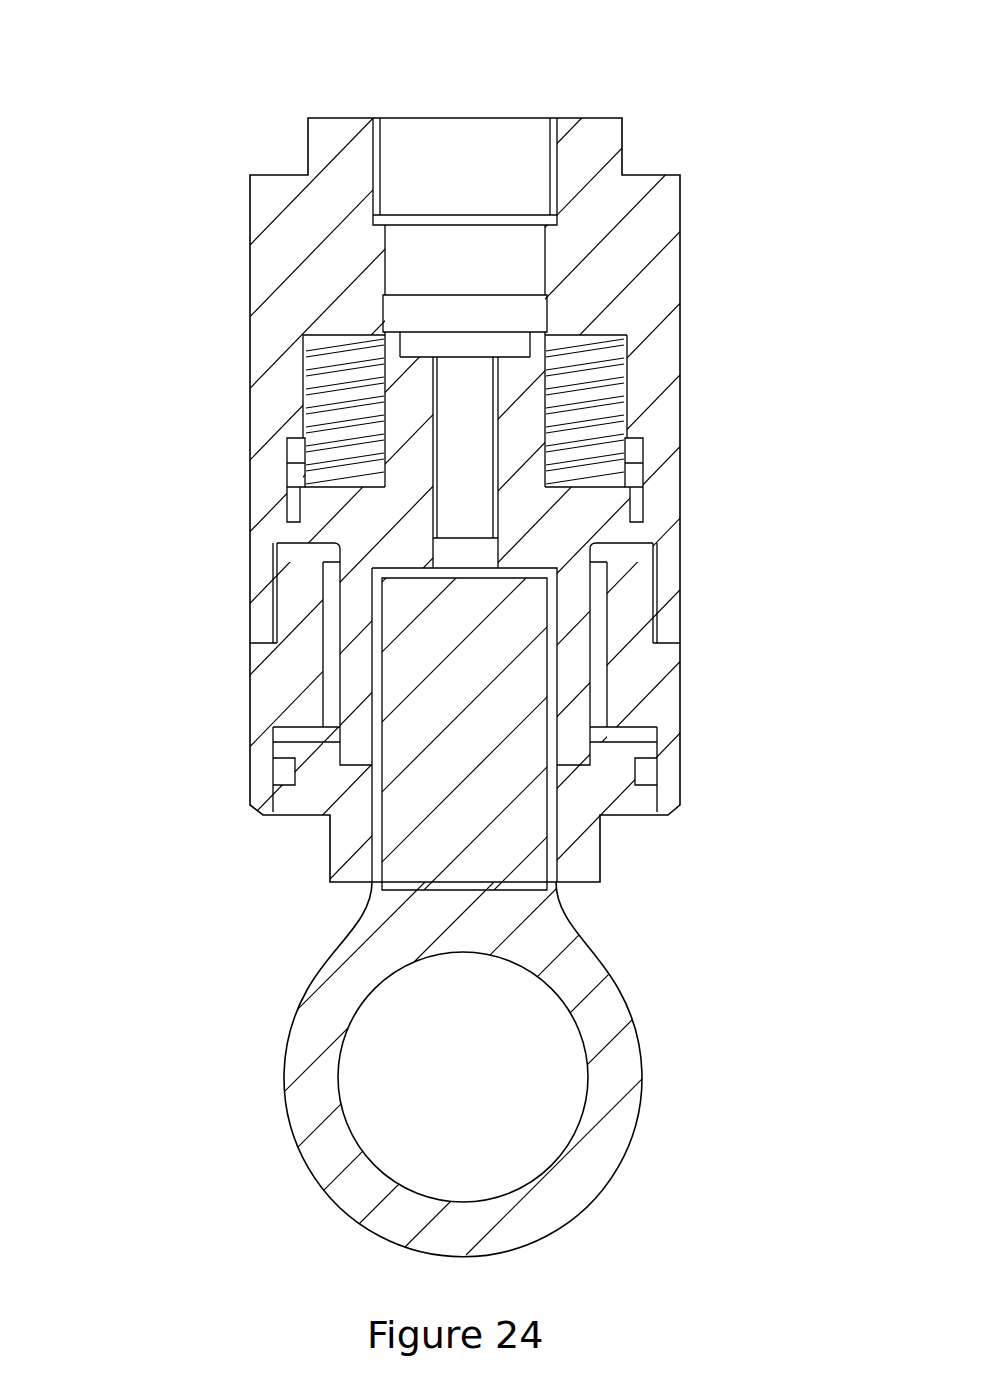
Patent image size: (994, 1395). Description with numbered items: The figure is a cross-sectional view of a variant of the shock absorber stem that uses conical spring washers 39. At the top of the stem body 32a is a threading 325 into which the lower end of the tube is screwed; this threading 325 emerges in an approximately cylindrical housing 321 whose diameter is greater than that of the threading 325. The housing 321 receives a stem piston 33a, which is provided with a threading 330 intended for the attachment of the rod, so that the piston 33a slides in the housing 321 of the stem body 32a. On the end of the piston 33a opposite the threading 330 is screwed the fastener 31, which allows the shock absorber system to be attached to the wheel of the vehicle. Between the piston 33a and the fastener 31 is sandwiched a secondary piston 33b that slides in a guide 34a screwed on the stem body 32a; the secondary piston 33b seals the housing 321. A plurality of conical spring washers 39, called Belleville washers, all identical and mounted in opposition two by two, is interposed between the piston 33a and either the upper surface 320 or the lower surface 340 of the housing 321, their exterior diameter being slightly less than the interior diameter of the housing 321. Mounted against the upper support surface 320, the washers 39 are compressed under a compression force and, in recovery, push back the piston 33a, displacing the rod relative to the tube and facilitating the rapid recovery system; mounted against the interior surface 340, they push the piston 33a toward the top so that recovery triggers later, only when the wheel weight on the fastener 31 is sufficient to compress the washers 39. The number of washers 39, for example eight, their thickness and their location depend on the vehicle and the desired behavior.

The fastener 31 is at (328, 1008).
The stem body 32a is at (613, 273).
The stem piston 33a is at (382, 528).
The secondary piston 33b is at (583, 855).
The guide 34a is at (282, 692).
The conical spring washers 39 is at (633, 407).
The upper surface of the housing 320 is at (372, 348).
The housing 321 is at (317, 392).
The threading 325 is at (398, 122).
The threading 330 is at (440, 520).
The lower surface of the housing 340 is at (620, 547).